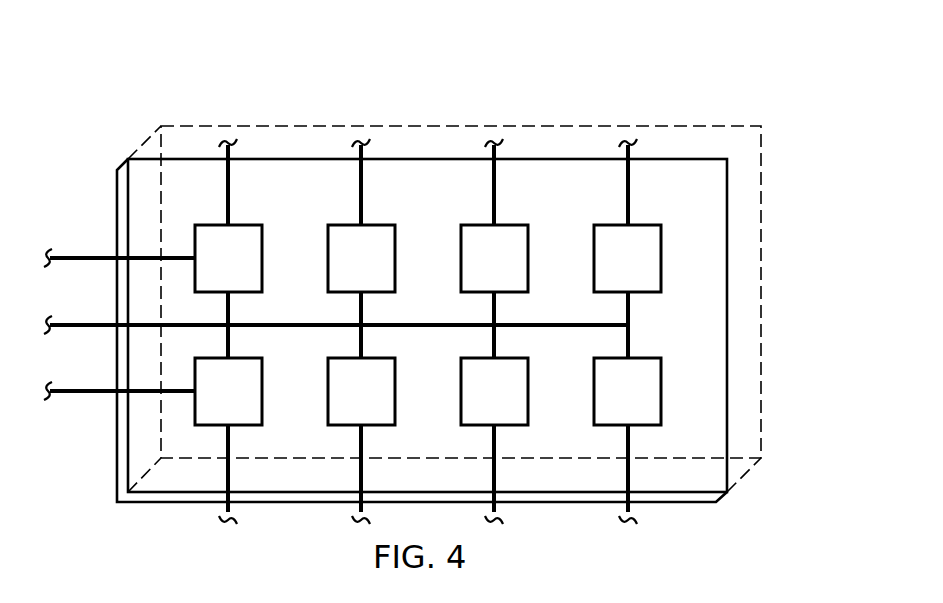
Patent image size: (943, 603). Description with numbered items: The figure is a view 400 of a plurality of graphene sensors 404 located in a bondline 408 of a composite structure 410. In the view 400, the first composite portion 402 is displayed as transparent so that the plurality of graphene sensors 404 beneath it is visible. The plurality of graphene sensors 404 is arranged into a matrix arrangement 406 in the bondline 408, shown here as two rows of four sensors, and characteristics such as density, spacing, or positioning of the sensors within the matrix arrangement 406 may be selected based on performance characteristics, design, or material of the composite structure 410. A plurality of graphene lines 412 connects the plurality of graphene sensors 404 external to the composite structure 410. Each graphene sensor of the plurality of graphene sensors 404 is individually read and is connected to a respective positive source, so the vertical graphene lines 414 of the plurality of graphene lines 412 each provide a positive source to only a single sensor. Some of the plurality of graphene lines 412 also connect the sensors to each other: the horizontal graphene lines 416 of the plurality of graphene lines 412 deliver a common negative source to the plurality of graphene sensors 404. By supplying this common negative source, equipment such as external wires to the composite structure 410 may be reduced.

The view 400 is at (246, 66).
The first composite portion 402 is at (761, 248).
The plurality of graphene sensors 404 is at (249, 272).
The matrix arrangement 406 is at (382, 403).
The bondline 408 is at (122, 203).
The composite structure 410 is at (530, 94).
The plurality of graphene lines 412 is at (95, 325).
The graphene lines 414 is at (497, 193).
The graphene lines 416 is at (630, 330).